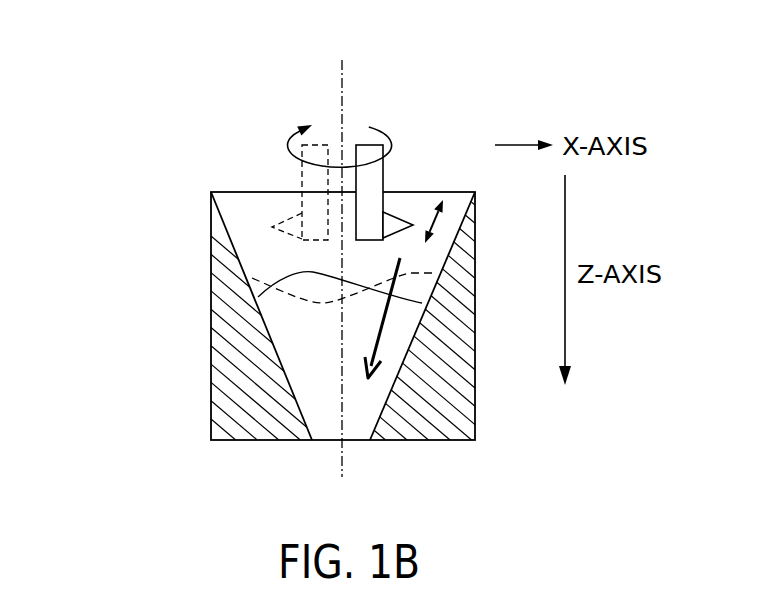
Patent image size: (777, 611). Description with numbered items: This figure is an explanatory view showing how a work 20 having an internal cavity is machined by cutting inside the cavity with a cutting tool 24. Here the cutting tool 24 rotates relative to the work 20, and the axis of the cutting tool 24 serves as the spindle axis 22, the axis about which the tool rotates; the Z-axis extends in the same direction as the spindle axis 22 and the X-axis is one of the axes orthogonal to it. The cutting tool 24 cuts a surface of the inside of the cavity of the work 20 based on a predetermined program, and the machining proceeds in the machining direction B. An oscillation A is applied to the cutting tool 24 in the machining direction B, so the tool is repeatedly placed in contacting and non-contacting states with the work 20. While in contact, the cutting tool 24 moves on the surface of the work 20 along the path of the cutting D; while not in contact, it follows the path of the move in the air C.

The work 20 is at (211, 363).
The spindle axis 22 is at (343, 254).
The cutting tool 24 is at (383, 168).
The oscillation A is at (434, 221).
The machining direction B is at (385, 325).
The move in the air C is at (312, 318).
The cutting D is at (275, 270).